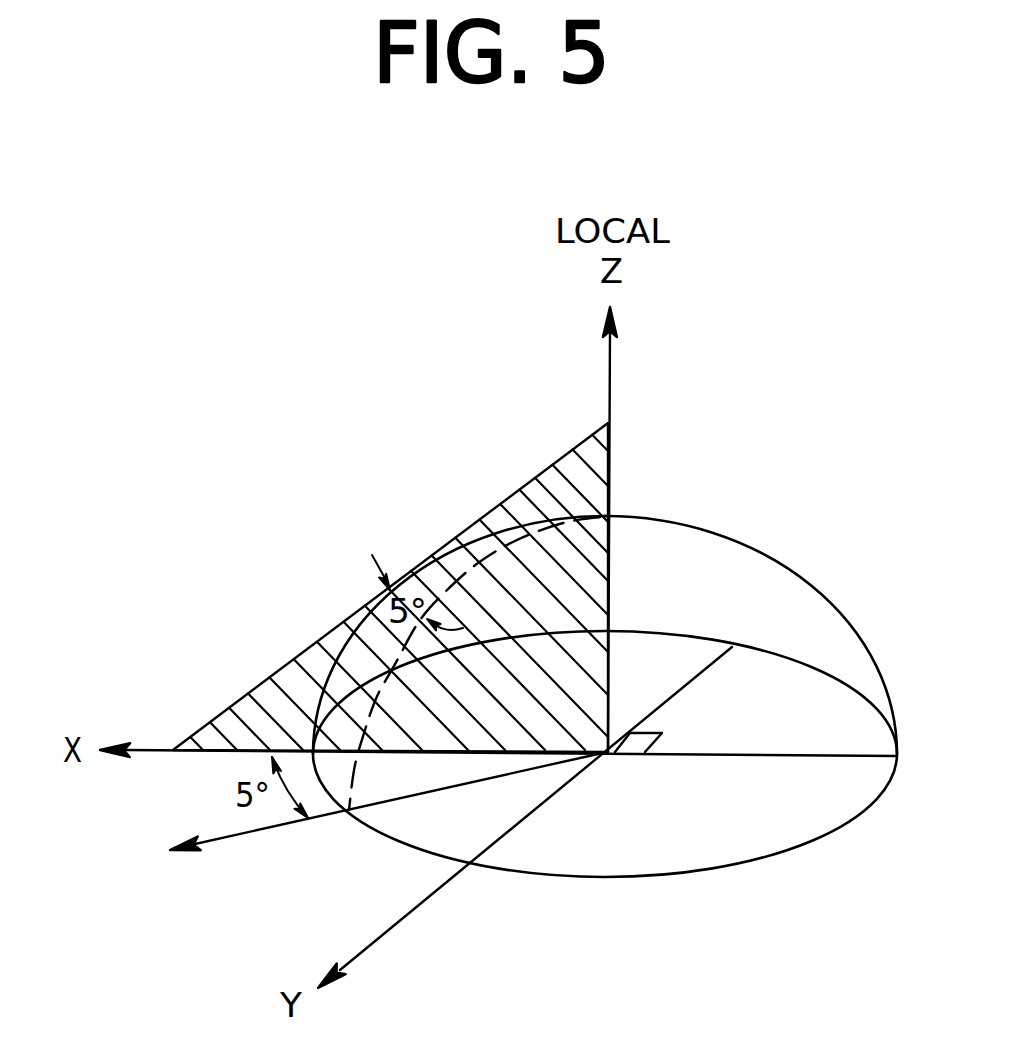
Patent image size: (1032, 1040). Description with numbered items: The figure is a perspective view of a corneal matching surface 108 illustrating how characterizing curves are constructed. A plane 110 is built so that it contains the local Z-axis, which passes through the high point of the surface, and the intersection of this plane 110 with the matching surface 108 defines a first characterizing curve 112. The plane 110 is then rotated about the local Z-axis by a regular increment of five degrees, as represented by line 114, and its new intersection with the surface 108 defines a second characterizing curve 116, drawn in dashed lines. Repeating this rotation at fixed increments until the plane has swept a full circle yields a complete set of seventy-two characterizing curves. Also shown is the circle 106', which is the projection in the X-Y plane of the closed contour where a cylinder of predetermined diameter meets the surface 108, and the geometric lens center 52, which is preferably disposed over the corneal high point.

The geometric lens center 52 is at (609, 516).
The circle 106' is at (620, 768).
The corneal matching surface 108 is at (800, 577).
The plane 110 is at (247, 692).
The first characterizing curve 112 is at (350, 636).
The line 114 is at (246, 836).
The second characterizing curve 116 is at (372, 715).